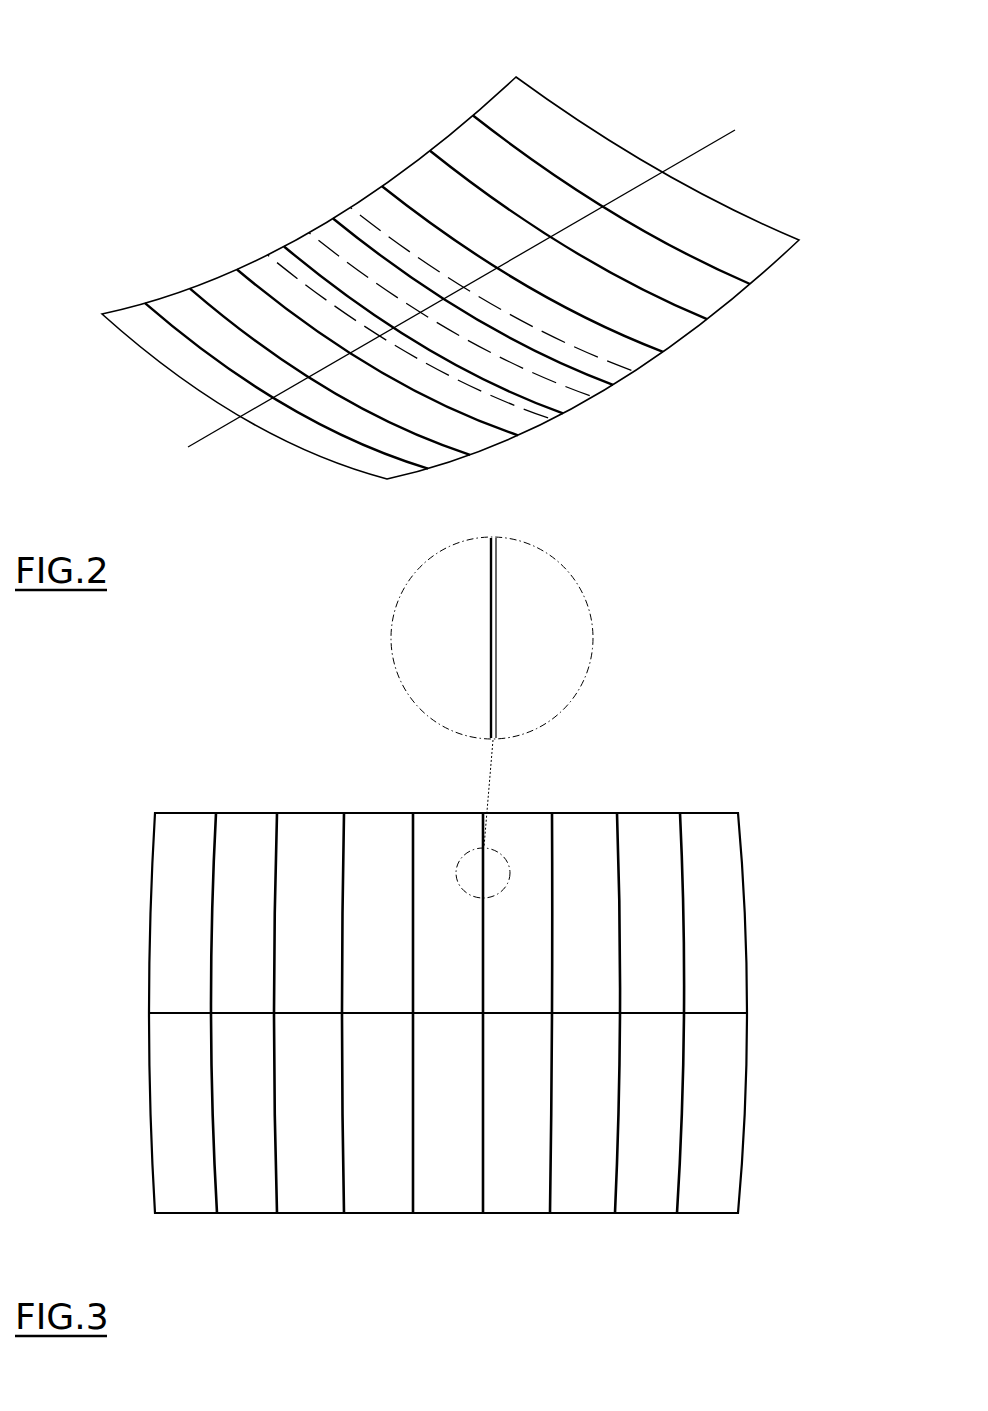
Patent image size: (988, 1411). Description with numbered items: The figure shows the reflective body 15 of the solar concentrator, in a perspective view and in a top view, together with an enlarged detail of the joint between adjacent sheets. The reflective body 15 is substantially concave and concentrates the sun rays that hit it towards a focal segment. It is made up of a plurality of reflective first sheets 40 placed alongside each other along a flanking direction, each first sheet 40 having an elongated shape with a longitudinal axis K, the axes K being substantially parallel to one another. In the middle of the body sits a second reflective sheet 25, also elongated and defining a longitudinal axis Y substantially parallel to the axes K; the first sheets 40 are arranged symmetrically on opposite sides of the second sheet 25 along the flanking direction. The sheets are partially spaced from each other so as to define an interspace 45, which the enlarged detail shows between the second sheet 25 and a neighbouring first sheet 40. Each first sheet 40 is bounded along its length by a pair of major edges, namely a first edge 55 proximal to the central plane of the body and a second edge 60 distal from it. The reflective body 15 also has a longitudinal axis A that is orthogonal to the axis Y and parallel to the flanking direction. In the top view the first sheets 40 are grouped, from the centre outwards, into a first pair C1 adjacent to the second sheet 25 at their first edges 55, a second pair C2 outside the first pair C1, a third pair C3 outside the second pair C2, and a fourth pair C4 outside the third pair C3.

In FIG. 2, the reflective body 15 is at (38, 0).
In FIG. 3, the reflective body 15 is at (113, 743).
In FIG. 2, the second reflective sheet 25 is at (315, 218).
In FIG. 3, the second reflective sheet 25 is at (431, 1061).
In FIG. 2, the first sheet 40 is at (517, 113).
In FIG. 3, the first sheet 40 is at (729, 1061).
In FIG. 3, the interspace 45 is at (493, 533).
In FIG. 3, the first edge 55 is at (342, 853).
In FIG. 3, the second edge 60 is at (282, 858).
In FIG. 2, the longitudinal axis of the reflective body A is at (461, 274).
In FIG. 2, the longitudinal axis of the first sheet K is at (634, 371).
In FIG. 2, the longitudinal axis of the second sheet Y is at (593, 397).
In FIG. 3, the first pair of first sheets C1 is at (515, 1200).
In FIG. 3, the second pair of first sheets C2 is at (587, 1197).
In FIG. 3, the third pair of first sheets C3 is at (245, 1197).
In FIG. 3, the fourth pair of first sheets C4 is at (178, 1190).